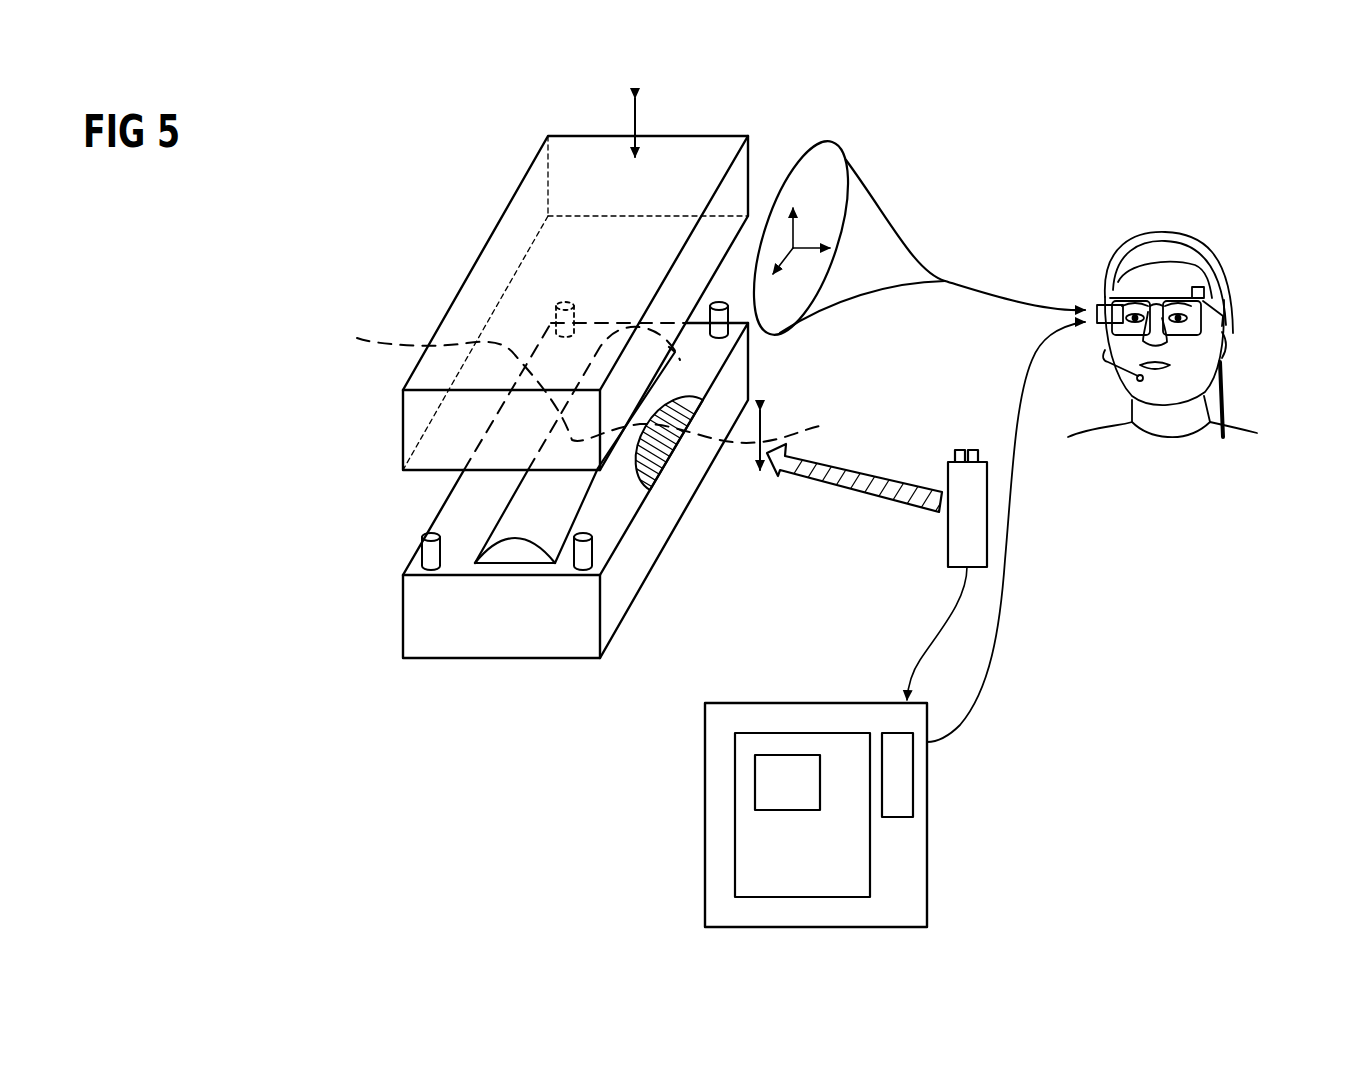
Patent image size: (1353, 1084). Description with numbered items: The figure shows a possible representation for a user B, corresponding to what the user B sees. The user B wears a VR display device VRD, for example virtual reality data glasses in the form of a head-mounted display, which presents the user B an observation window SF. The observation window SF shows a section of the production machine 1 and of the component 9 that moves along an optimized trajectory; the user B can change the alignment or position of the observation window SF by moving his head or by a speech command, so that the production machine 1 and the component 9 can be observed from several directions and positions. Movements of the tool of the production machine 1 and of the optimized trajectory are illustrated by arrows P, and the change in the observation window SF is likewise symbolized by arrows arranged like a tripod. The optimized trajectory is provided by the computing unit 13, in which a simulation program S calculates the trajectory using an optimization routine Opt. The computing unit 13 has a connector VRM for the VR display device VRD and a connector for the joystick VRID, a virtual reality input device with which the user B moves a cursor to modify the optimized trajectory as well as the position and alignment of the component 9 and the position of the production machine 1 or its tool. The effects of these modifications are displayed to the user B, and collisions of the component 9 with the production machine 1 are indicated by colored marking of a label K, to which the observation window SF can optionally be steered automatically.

The production machine 1 is at (475, 700).
The component 9 is at (515, 552).
The label K is at (660, 457).
The arrows P is at (643, 118).
The observation window SF is at (840, 165).
The VR display device VRD is at (1103, 300).
The user B is at (1192, 412).
The joystick VRID is at (947, 455).
The computing unit 13 is at (905, 873).
The simulation program S is at (802, 815).
The optimization routine Opt is at (787, 782).
The connector VRM is at (897, 783).